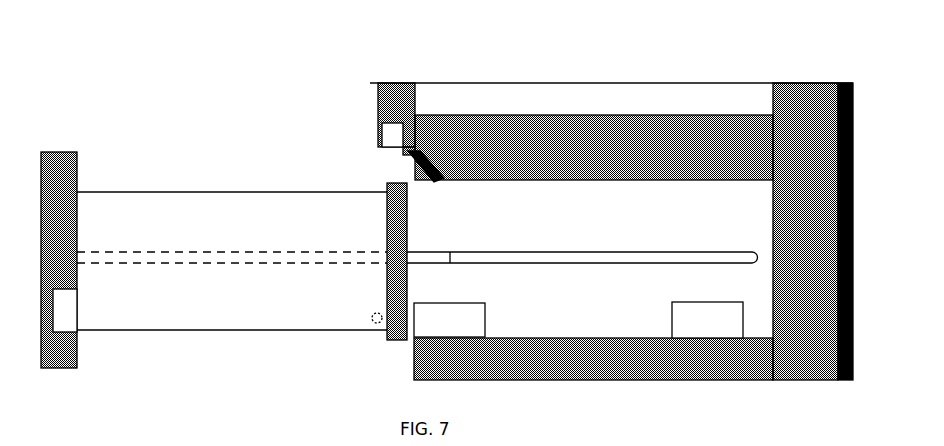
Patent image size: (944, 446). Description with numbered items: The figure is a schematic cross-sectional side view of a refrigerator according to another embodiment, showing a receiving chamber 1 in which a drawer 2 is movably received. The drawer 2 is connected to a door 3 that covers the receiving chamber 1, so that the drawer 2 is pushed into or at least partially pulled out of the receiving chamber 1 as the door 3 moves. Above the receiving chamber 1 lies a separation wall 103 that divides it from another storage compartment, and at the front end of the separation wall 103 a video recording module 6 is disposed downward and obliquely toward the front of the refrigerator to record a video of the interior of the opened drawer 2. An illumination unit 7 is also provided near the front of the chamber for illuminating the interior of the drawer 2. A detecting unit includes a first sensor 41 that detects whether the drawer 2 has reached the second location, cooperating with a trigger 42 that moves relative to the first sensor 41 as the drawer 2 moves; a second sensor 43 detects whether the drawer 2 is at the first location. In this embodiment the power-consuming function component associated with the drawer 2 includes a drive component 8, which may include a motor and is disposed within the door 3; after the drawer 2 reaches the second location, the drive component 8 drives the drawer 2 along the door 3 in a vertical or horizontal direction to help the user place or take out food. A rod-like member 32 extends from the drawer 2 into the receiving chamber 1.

The receiving chamber 1 is at (654, 226).
The drawer 2 is at (165, 200).
The door 3 is at (62, 181).
The video recording module 6 is at (438, 176).
The illumination unit 7 is at (392, 130).
The drive component 8 is at (62, 307).
The rod 32 is at (496, 252).
The first sensor 41 is at (485, 322).
The trigger 42 is at (382, 330).
The second sensor 43 is at (681, 316).
The separation wall 103 is at (520, 130).